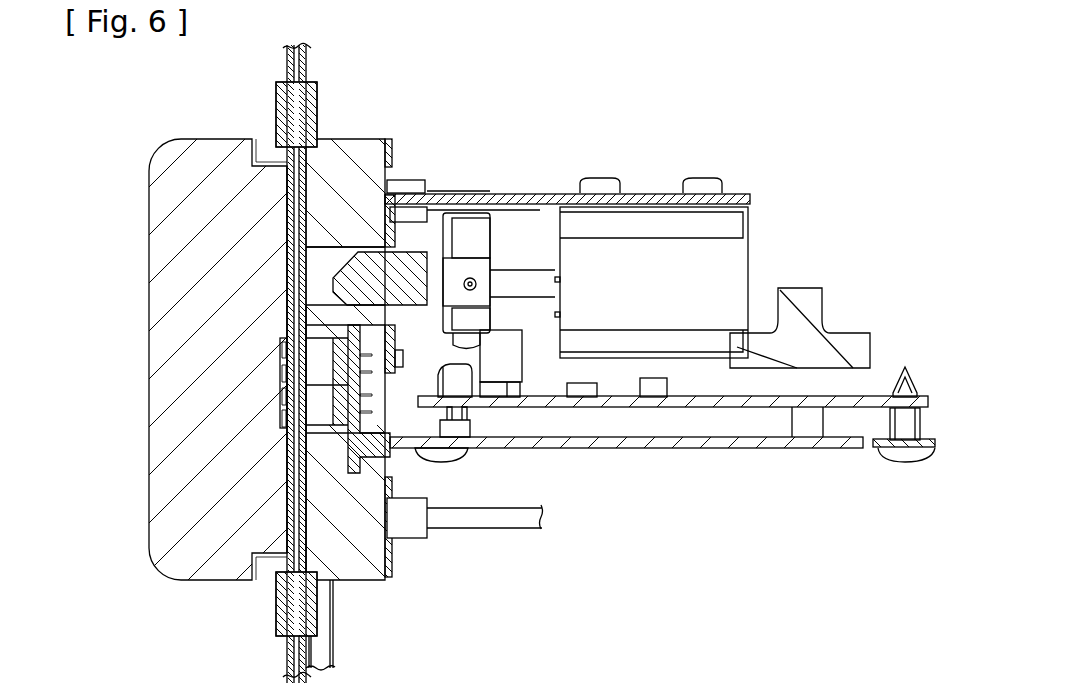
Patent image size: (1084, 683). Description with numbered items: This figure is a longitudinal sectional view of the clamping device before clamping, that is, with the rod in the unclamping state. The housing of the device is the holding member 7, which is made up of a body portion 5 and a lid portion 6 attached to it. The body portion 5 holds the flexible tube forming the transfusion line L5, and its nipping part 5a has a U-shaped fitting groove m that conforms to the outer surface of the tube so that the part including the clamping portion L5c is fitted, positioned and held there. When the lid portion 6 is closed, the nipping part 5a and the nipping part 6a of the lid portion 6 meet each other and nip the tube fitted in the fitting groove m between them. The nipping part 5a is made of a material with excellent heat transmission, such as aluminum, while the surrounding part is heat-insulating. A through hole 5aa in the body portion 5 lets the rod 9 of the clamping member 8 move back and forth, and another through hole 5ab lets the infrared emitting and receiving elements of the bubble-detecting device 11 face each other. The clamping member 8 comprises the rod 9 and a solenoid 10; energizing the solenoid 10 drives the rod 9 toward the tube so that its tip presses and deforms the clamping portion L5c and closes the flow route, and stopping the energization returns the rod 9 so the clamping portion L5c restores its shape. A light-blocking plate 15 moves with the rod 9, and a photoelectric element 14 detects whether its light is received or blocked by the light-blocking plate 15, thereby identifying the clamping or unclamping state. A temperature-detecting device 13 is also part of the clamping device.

The body portion 5 is at (355, 139).
The nipping part of the body portion 5a is at (285, 522).
The through hole 5aa is at (292, 258).
The through hole 5ab is at (290, 352).
The lid portion 6 is at (205, 139).
The nipping part of the lid portion 6a is at (310, 478).
The holding member 7 is at (301, 332).
The clamping member 8 is at (564, 186).
The rod 9 is at (335, 276).
The solenoid 10 is at (737, 250).
The bubble-detecting device 11 is at (273, 410).
The temperature-detecting device 13 is at (335, 618).
The photoelectric element 14 is at (457, 387).
The light-blocking plate 15 is at (495, 373).
The transfusion line L5 is at (290, 660).
The clamping portion L5c is at (300, 284).
The fitting groove m is at (383, 178).